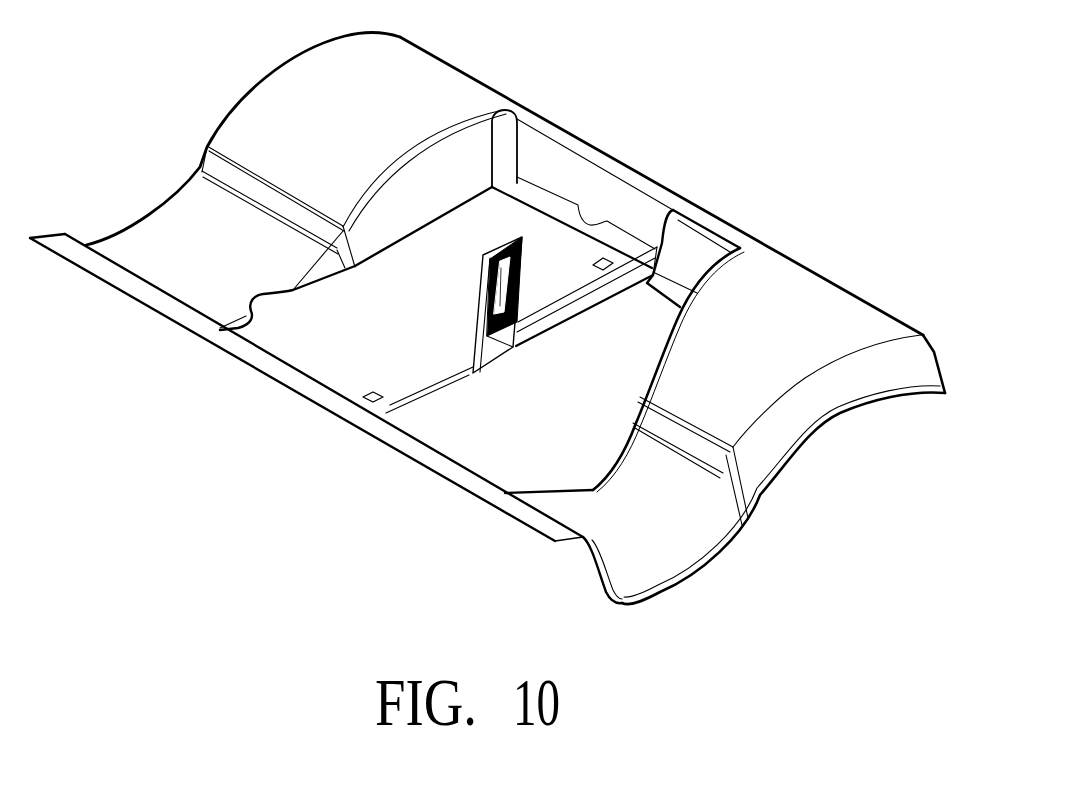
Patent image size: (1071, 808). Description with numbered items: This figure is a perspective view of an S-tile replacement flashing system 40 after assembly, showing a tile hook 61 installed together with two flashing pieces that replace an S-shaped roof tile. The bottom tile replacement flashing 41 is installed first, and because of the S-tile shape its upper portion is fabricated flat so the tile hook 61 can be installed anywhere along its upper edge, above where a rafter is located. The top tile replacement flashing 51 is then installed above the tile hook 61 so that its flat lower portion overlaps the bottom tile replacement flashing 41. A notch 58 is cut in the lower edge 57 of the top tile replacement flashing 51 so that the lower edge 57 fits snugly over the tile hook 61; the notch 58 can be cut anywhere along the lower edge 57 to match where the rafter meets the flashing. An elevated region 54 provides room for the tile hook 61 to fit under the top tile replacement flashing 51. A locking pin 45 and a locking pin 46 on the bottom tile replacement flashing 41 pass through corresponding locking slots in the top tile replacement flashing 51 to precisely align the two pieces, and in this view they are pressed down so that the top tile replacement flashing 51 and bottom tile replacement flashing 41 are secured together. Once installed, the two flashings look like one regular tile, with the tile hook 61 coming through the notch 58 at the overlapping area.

The S-tile replacement flashing system 40 is at (722, 59).
The bottom tile replacement flashing 41 is at (800, 452).
The locking pin 45 is at (366, 391).
The locking pin 46 is at (604, 258).
The top tile replacement flashing 51 is at (268, 78).
The elevated region 54 is at (395, 357).
The lower edge 57 is at (570, 317).
The notch 58 is at (473, 373).
The tile hook 61 is at (507, 343).